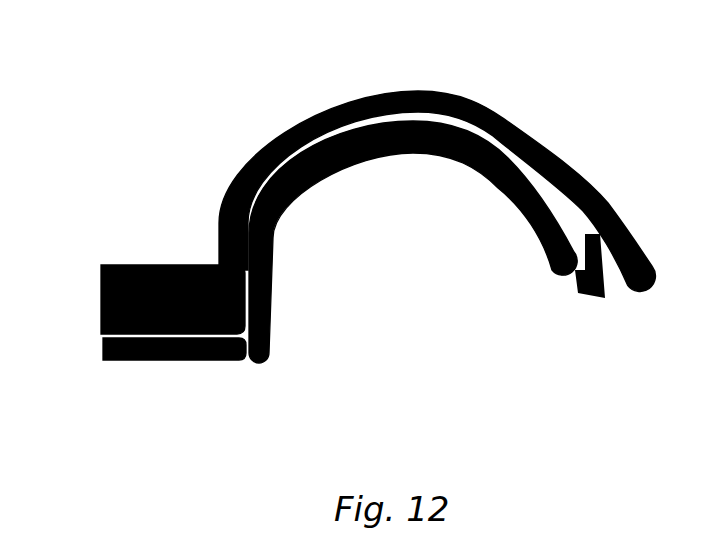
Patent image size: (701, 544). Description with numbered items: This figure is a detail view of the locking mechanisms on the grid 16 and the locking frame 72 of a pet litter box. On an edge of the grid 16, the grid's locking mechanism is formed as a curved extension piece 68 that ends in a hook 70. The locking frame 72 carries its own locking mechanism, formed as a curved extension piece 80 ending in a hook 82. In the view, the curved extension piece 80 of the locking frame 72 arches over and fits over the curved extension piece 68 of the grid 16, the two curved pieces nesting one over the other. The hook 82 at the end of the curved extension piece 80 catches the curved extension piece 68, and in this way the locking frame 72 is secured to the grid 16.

The grid 16 is at (116, 336).
The curved extension piece 68 is at (338, 150).
The hook 70 is at (437, 225).
The locking frame 72 is at (125, 276).
The curved extension piece 80 is at (520, 138).
The hook 82 is at (583, 272).